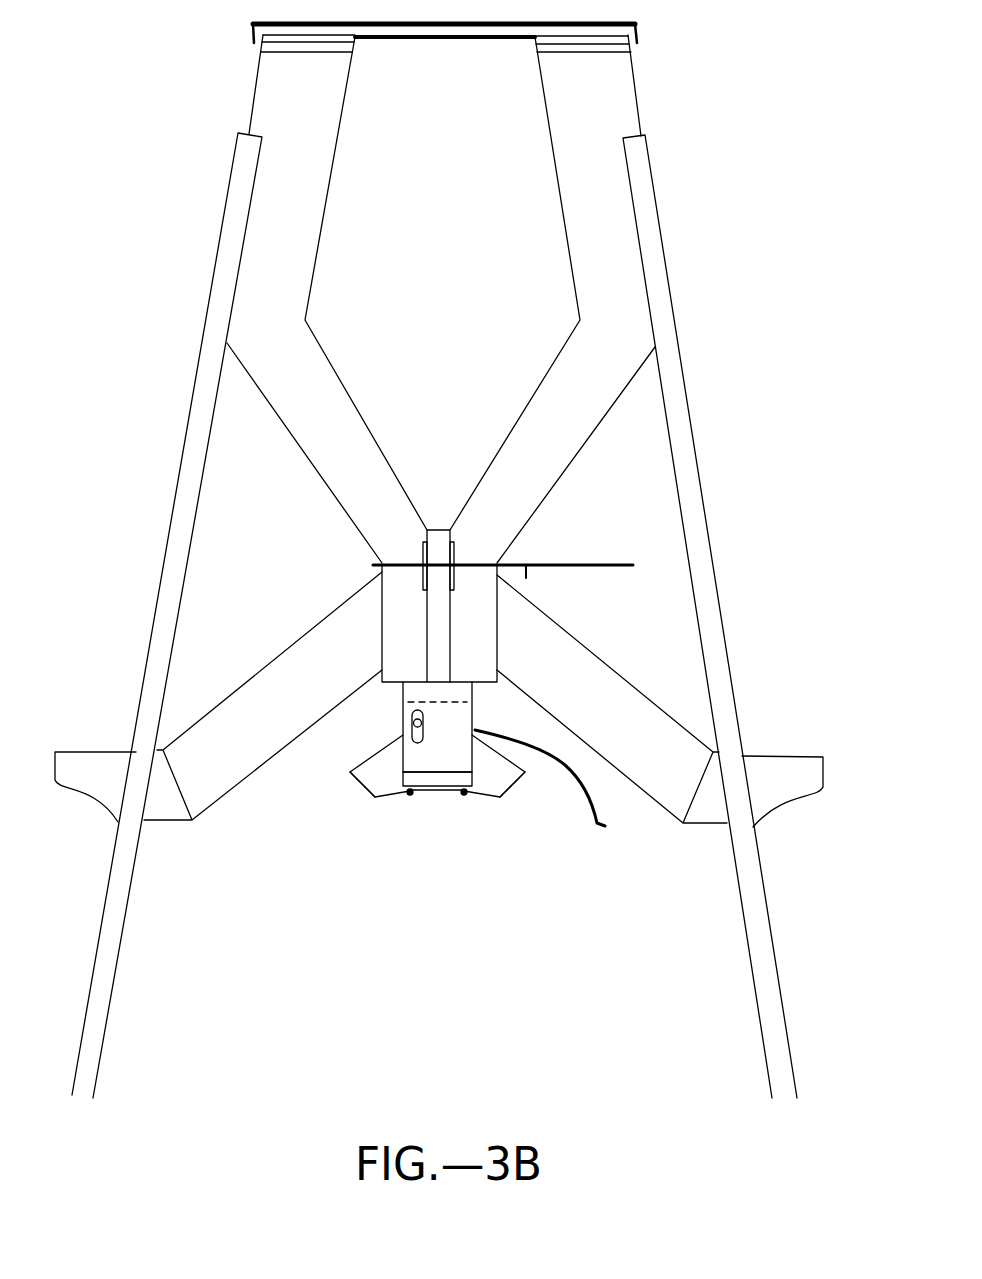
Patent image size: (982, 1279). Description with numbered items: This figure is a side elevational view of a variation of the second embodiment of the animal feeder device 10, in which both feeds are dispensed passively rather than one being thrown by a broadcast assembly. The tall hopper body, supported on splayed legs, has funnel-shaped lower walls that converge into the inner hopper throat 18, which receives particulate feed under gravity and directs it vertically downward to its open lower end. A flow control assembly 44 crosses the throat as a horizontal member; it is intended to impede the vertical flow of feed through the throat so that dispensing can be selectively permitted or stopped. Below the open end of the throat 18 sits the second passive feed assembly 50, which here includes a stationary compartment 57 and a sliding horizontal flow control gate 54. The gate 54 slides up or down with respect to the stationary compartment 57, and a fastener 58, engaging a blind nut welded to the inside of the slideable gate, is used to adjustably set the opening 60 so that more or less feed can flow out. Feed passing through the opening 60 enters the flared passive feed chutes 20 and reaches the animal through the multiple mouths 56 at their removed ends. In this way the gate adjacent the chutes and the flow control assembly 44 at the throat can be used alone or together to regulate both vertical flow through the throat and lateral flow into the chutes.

The animal feeder device 10 is at (703, 158).
The inner hopper throat 18 is at (452, 633).
The flow control assembly 44 is at (573, 563).
The stationary compartment 57 is at (463, 714).
The fastener 58 is at (409, 723).
The passive feed chute 20 is at (365, 760).
The mouths 56 is at (362, 788).
The second passive feed assembly 50 is at (430, 808).
The opening 60 is at (467, 778).
The horizontal flow control gate 54 is at (565, 789).